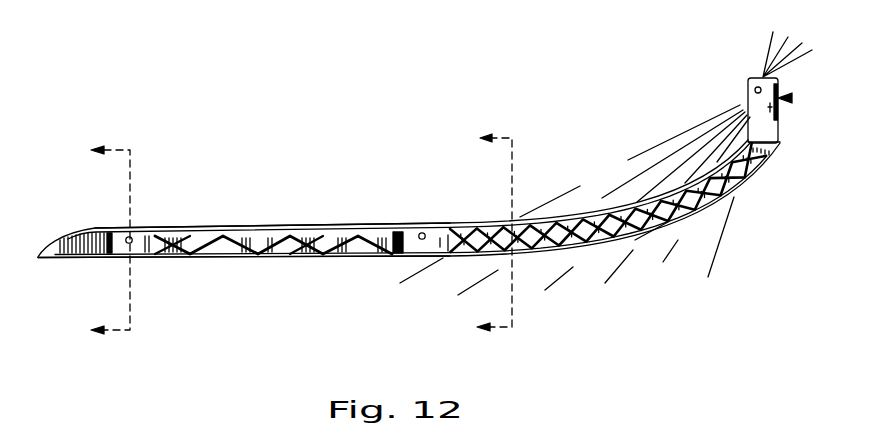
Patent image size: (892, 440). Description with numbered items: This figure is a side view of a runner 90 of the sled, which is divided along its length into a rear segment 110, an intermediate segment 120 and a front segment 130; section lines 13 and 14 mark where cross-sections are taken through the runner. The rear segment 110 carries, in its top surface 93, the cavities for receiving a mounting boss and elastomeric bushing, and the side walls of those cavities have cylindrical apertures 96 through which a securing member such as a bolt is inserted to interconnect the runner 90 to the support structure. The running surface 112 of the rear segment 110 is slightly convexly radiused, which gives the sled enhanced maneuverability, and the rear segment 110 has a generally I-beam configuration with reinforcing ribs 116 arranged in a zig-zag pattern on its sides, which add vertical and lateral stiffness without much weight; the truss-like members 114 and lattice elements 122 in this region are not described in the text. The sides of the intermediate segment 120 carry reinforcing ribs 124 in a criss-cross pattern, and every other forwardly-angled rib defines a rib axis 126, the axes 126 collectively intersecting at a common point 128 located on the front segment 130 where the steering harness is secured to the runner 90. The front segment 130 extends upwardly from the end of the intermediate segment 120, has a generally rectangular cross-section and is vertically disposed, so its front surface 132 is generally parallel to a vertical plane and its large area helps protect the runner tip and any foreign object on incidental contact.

The section line 13- 13 is at (496, 234).
The section line 14- 14 is at (109, 242).
The runner 90 is at (312, 226).
The top surface 93 is at (212, 220).
The cylindrical apertures 96 is at (132, 238).
The rear segment 110 is at (88, 230).
The running surface 112 is at (222, 272).
The truss members 114 is at (273, 260).
The reinforcing ribs 116 is at (374, 247).
The intermediate segment 120 is at (582, 217).
The lattice members 122 is at (573, 254).
The reinforcing ribs 124 is at (643, 235).
The rib axis 126 is at (656, 143).
The common point 128 is at (757, 78).
The front segment 130 is at (747, 84).
The front surface 132 is at (791, 98).